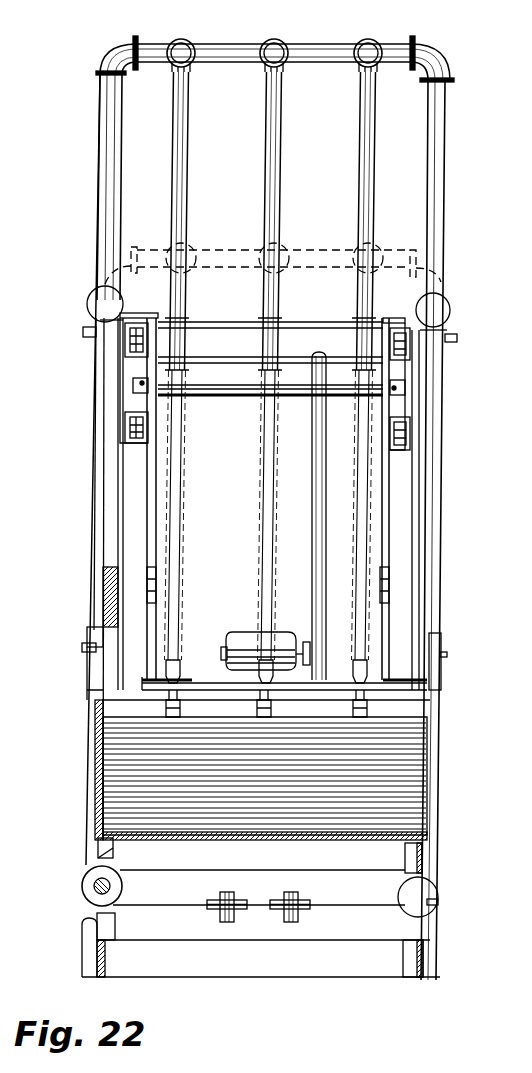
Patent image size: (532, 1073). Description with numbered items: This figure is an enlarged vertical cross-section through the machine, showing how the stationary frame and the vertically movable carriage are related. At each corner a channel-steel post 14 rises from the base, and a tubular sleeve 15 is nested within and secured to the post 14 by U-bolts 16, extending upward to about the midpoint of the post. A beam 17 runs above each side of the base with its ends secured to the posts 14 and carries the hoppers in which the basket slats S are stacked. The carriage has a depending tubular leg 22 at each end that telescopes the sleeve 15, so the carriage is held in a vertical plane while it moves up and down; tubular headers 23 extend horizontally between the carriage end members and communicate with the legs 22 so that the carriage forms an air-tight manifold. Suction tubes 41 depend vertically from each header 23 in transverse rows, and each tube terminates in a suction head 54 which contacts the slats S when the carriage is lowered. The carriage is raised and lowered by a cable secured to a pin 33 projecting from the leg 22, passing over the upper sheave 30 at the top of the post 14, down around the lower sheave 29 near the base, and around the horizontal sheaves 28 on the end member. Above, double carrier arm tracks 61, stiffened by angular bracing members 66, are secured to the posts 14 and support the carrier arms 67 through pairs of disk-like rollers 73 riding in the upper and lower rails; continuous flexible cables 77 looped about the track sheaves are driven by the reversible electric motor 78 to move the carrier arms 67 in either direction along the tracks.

The post 14 is at (112, 558).
The tubular sleeve 15 is at (100, 708).
The U-bolt 16 is at (82, 647).
The beam 17 is at (84, 850).
The tubular leg 22 is at (107, 150).
The tubular header 23 is at (190, 46).
The sheave 28 is at (290, 920).
The sheave 29 is at (83, 887).
The sheave 30 is at (443, 298).
The pin 33 is at (86, 330).
The suction tube 41 is at (281, 141).
The suction head 54 is at (174, 662).
The carrier arm track 61 is at (125, 343).
The angular bracing member 66 is at (120, 386).
The carrier arm 67 is at (150, 518).
The roller 73 is at (125, 427).
The flexible cable 77 is at (400, 386).
The electric motor 78 is at (246, 640).
The basket slat S is at (412, 768).